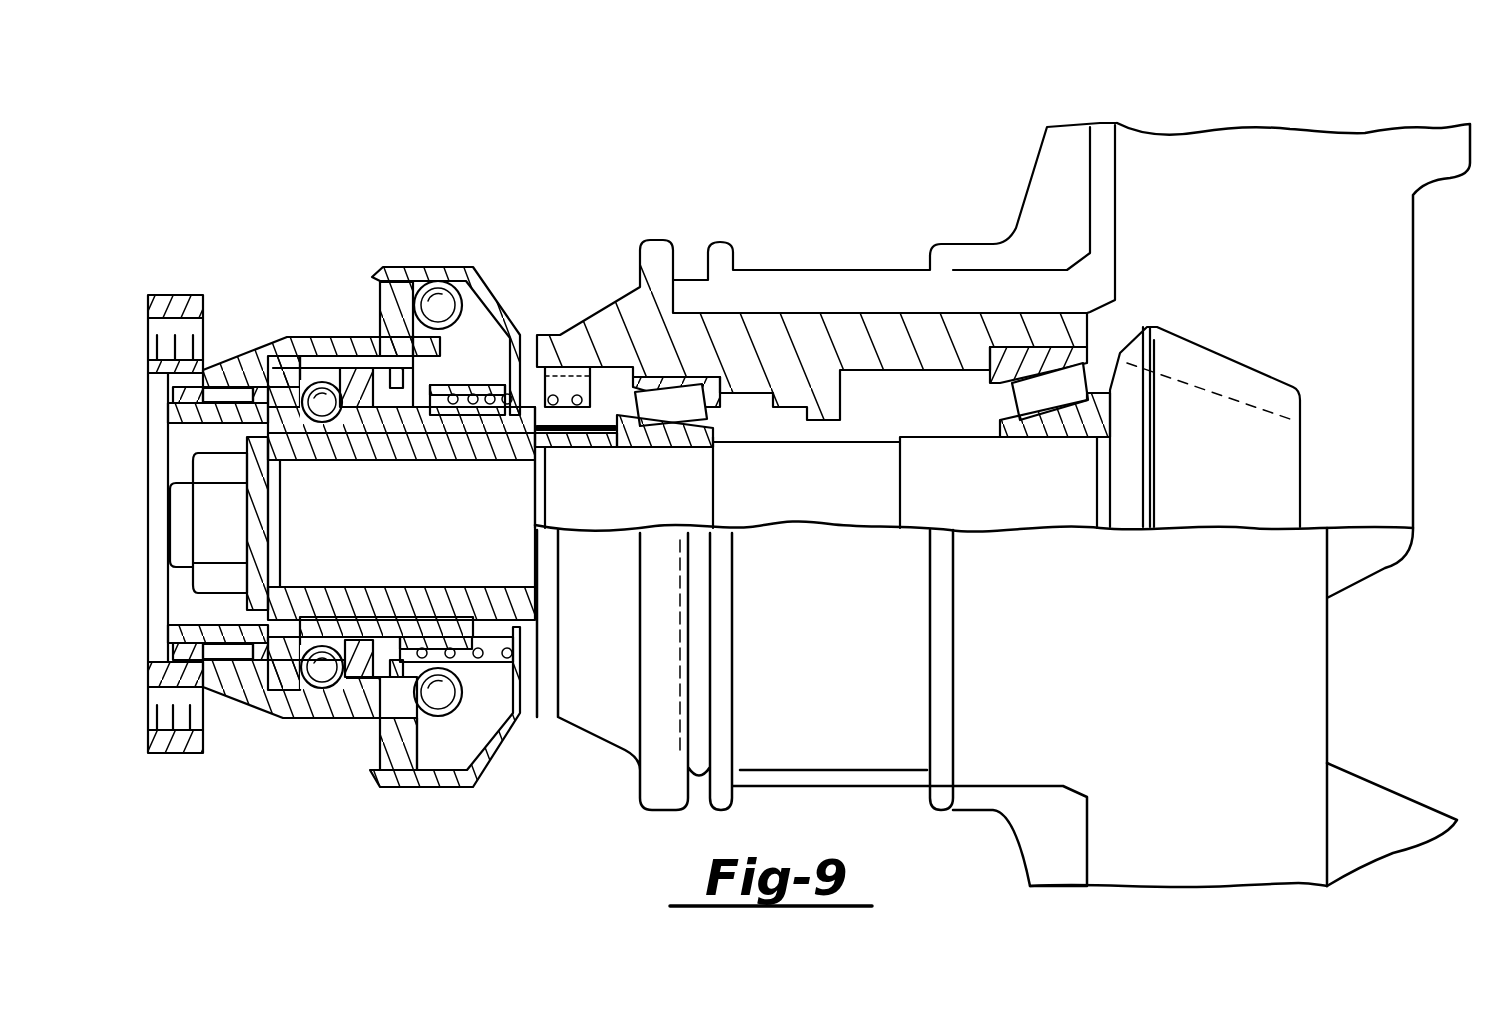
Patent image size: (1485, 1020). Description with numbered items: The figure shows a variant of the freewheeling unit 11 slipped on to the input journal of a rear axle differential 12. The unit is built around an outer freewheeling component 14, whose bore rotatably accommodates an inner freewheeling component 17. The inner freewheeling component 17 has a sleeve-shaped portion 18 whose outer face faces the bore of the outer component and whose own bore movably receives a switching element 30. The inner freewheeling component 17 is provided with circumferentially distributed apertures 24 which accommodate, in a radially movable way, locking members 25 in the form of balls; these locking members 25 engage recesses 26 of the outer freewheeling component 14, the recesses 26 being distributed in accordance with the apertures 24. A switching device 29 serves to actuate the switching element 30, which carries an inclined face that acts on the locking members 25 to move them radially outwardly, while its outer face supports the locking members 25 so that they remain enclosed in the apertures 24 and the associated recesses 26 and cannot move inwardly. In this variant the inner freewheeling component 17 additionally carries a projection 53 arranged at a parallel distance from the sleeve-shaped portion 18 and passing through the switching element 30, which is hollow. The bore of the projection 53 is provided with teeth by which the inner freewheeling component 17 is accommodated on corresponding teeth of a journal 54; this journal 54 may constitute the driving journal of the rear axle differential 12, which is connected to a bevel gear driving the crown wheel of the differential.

The freewheeling unit 11 is at (490, 268).
The rear axle differential 12 is at (1292, 183).
The outer freewheeling component 14 is at (277, 357).
The inner freewheeling component 17 is at (150, 385).
The sleeve-shaped portion 18 is at (335, 687).
The apertures 24 is at (292, 352).
The locking members 25 is at (338, 393).
The recesses 26 is at (375, 352).
The switching device 29 is at (467, 355).
The switching element 30 is at (360, 365).
The projection 53 is at (403, 600).
The journal 54 is at (473, 550).